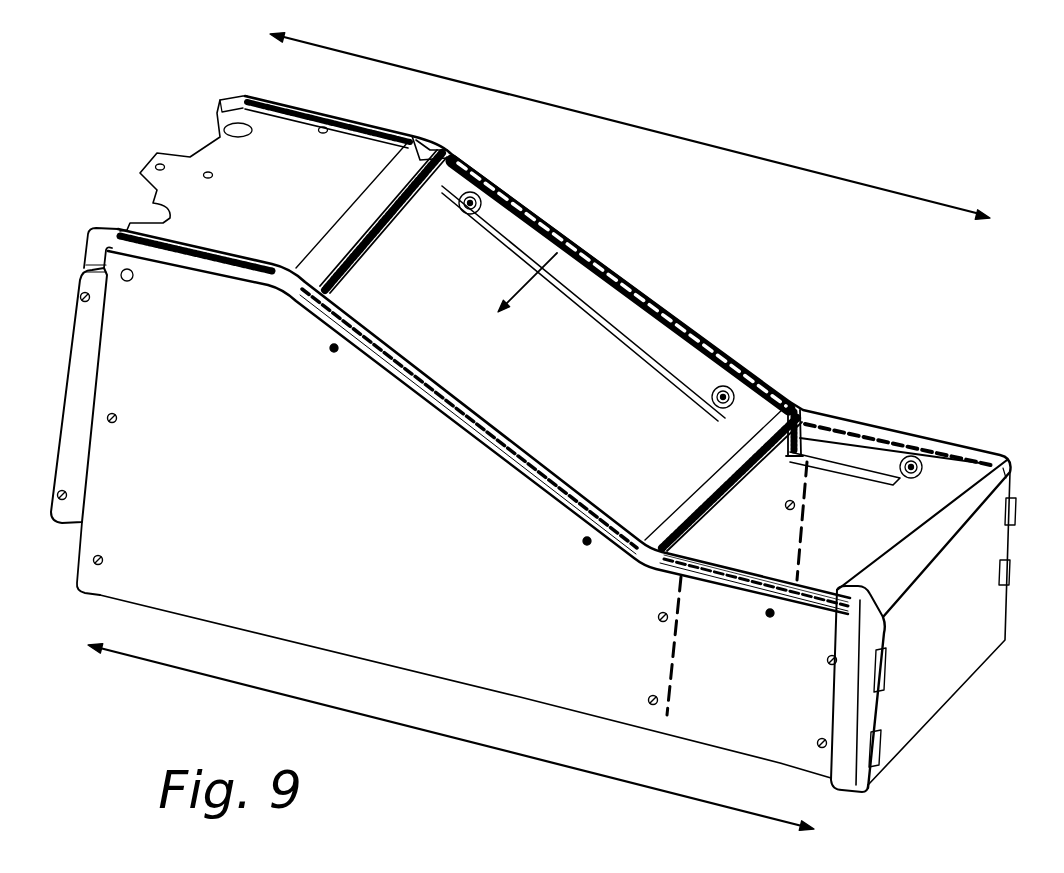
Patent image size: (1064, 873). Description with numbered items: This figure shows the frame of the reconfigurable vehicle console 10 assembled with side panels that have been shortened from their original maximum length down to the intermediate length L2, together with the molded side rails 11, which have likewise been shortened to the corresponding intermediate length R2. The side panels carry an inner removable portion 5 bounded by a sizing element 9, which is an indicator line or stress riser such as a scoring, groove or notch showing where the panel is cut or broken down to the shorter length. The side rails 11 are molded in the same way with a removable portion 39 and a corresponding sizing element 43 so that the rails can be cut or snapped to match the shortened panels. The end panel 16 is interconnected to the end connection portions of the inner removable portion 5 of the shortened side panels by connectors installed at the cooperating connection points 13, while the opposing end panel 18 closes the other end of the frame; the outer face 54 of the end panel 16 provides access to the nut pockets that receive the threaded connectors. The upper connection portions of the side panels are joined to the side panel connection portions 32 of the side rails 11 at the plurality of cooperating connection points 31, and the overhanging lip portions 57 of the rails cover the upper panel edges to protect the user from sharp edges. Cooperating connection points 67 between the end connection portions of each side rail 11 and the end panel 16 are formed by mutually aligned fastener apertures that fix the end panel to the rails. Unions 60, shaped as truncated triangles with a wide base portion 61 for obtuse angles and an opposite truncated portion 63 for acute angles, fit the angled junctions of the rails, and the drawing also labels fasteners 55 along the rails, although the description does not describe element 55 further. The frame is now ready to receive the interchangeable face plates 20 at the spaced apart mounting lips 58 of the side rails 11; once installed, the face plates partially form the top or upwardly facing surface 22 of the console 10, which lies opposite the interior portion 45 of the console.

The reconfigurable vehicle console 10 is at (180, 100).
The face plate 20 is at (318, 192).
The union 60 is at (388, 139).
The wide base portion 61 is at (422, 152).
The truncated portion 63 is at (407, 217).
The side rail 11 is at (517, 200).
The mounting lip 58 is at (367, 333).
The overhanging lip portion 57 is at (432, 393).
The fastener 55 is at (478, 188).
The side panel connection portion 32 is at (615, 320).
The interior portion 45 is at (577, 247).
The upwardly facing surface 22 is at (852, 282).
The sizing element 43 is at (817, 420).
The removable portion 39 is at (927, 435).
The end panel 16 is at (1015, 468).
The outer face 54 is at (943, 652).
The cooperating connection point 67 is at (1017, 503).
The end panel 18 is at (103, 593).
The removable portion 5 is at (860, 532).
The sizing element 9 is at (797, 533).
The connection point 31 is at (132, 282).
The connection point 13 is at (118, 413).
The intermediate length R2 is at (604, 117).
The intermediate length L2 is at (497, 752).